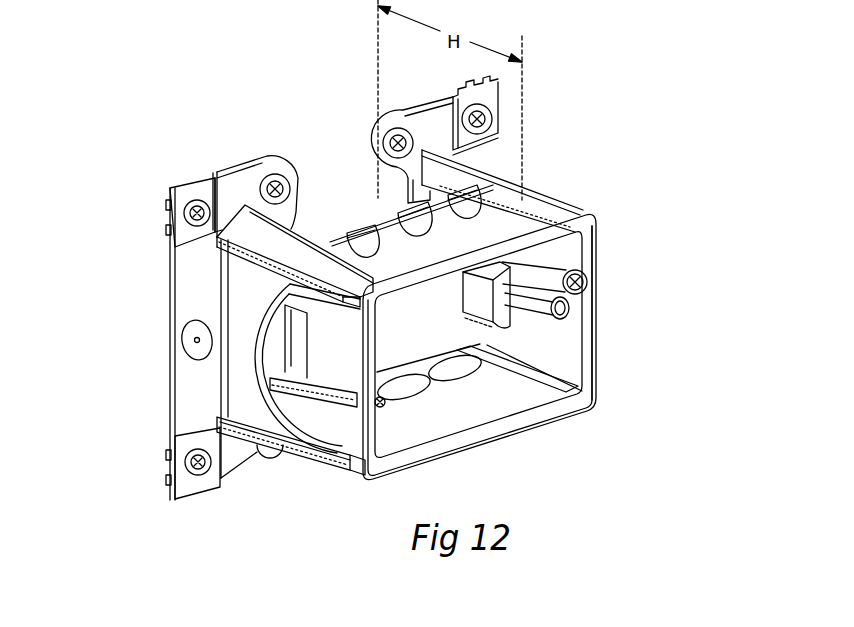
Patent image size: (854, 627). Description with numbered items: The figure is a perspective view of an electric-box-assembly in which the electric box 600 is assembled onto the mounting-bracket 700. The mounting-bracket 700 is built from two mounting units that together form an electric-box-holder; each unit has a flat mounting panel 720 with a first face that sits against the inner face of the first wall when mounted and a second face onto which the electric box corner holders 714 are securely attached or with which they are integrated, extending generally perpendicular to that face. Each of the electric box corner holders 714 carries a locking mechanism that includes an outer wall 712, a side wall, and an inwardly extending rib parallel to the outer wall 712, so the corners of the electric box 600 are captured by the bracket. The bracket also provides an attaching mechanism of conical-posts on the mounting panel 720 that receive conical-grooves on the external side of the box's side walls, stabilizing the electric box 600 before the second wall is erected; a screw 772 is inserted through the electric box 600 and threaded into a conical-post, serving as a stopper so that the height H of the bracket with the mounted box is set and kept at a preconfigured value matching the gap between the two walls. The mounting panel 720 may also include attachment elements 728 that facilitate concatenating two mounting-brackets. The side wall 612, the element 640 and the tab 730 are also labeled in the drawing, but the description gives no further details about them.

The electric box 600 is at (503, 433).
The side wall of box 612 is at (592, 378).
The mounting tube/boss 640 is at (560, 264).
The screw 772 is at (585, 278).
The mounting-bracket 700 is at (546, 192).
The outer wall 712 is at (245, 279).
The electric box corner holders 714 is at (321, 440).
The mounting panel 720 is at (172, 387).
The attachment elements 728 is at (180, 182).
The screw tab 730 is at (268, 168).